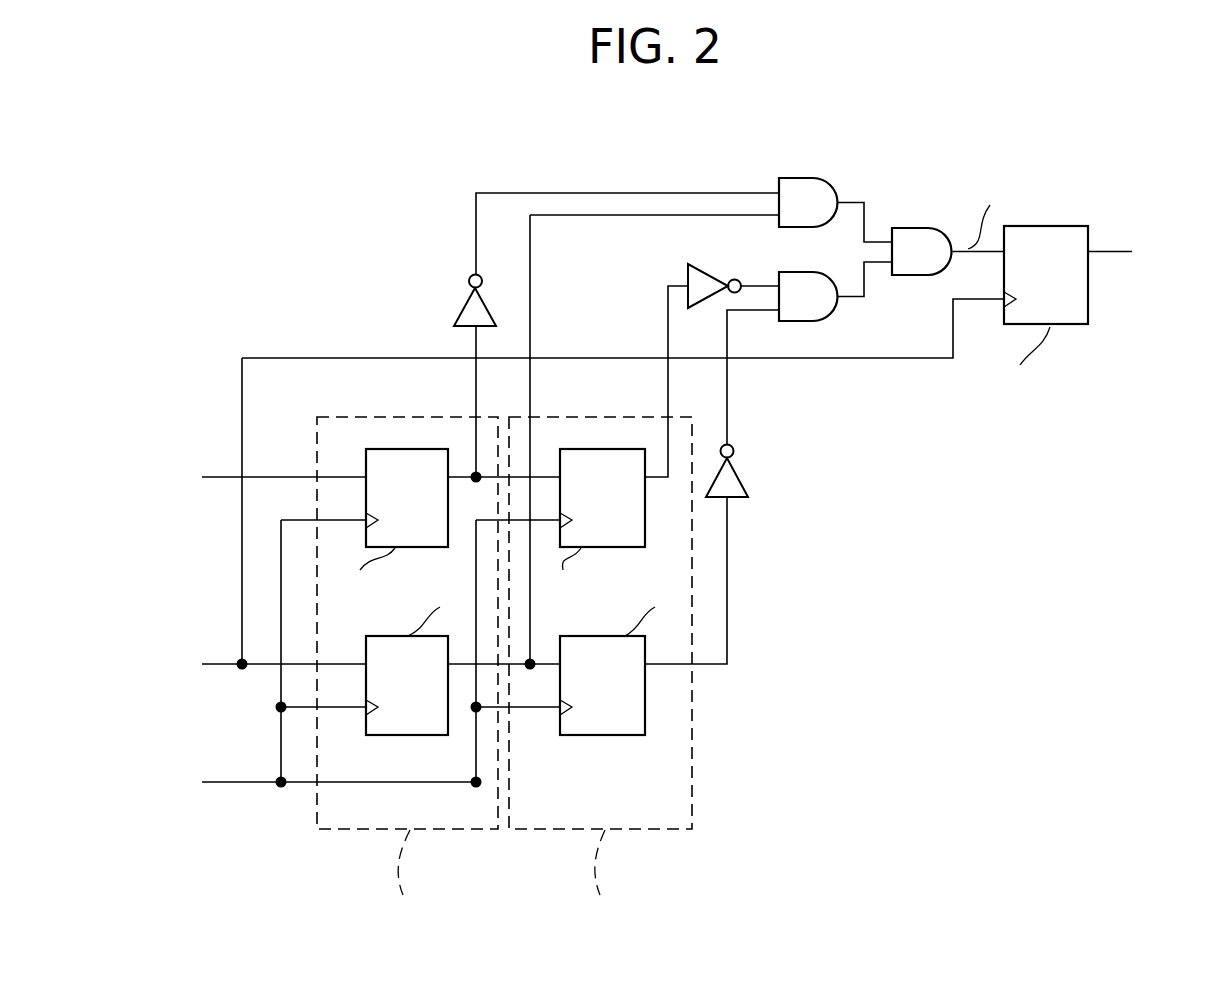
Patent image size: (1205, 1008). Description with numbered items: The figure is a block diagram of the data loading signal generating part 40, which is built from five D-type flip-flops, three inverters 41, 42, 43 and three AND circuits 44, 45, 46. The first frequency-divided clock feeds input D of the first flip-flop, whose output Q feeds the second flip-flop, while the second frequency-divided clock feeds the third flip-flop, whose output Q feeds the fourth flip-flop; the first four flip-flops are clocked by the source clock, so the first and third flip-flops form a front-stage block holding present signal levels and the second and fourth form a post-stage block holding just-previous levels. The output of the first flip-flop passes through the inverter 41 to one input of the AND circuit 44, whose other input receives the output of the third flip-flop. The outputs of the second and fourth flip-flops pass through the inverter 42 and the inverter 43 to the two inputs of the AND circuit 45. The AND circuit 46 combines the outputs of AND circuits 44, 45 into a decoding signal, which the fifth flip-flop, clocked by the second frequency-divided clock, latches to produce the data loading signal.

The data loading signal generating part 40 is at (500, 110).
The inverter 41 is at (455, 318).
The inverter 42 is at (708, 272).
The inverter 43 is at (738, 473).
The AND circuit 44 is at (812, 178).
The AND circuit 45 is at (837, 311).
The AND circuit 46 is at (918, 228).